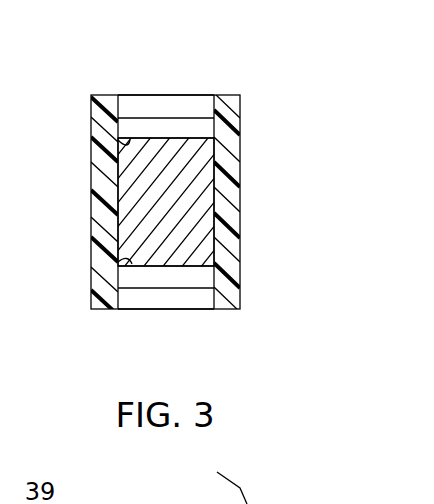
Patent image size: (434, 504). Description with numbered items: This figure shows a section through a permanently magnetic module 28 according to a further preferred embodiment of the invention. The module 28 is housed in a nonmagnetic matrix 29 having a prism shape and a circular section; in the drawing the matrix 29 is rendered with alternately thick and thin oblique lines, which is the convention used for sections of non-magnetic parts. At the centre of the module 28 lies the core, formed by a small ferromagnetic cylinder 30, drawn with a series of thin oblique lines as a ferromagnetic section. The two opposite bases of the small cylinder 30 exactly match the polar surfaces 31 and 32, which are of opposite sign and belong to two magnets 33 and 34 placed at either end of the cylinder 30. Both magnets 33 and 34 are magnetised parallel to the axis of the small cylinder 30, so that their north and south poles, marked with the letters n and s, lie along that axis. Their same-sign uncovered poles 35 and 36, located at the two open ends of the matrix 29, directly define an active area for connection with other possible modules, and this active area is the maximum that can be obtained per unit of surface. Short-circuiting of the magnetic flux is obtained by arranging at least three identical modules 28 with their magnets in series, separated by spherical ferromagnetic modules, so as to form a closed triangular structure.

The permanently magnetic module 28 is at (248, 267).
The nonmagnetic matrix 29 is at (227, 160).
The small ferromagnetic cylinder 30 is at (193, 219).
The polar surface 31 is at (118, 162).
The polar surface 32 is at (120, 255).
The magnet 33 is at (187, 118).
The magnet 34 is at (185, 292).
The uncovered pole 35 is at (133, 95).
The uncovered pole 36 is at (139, 311).